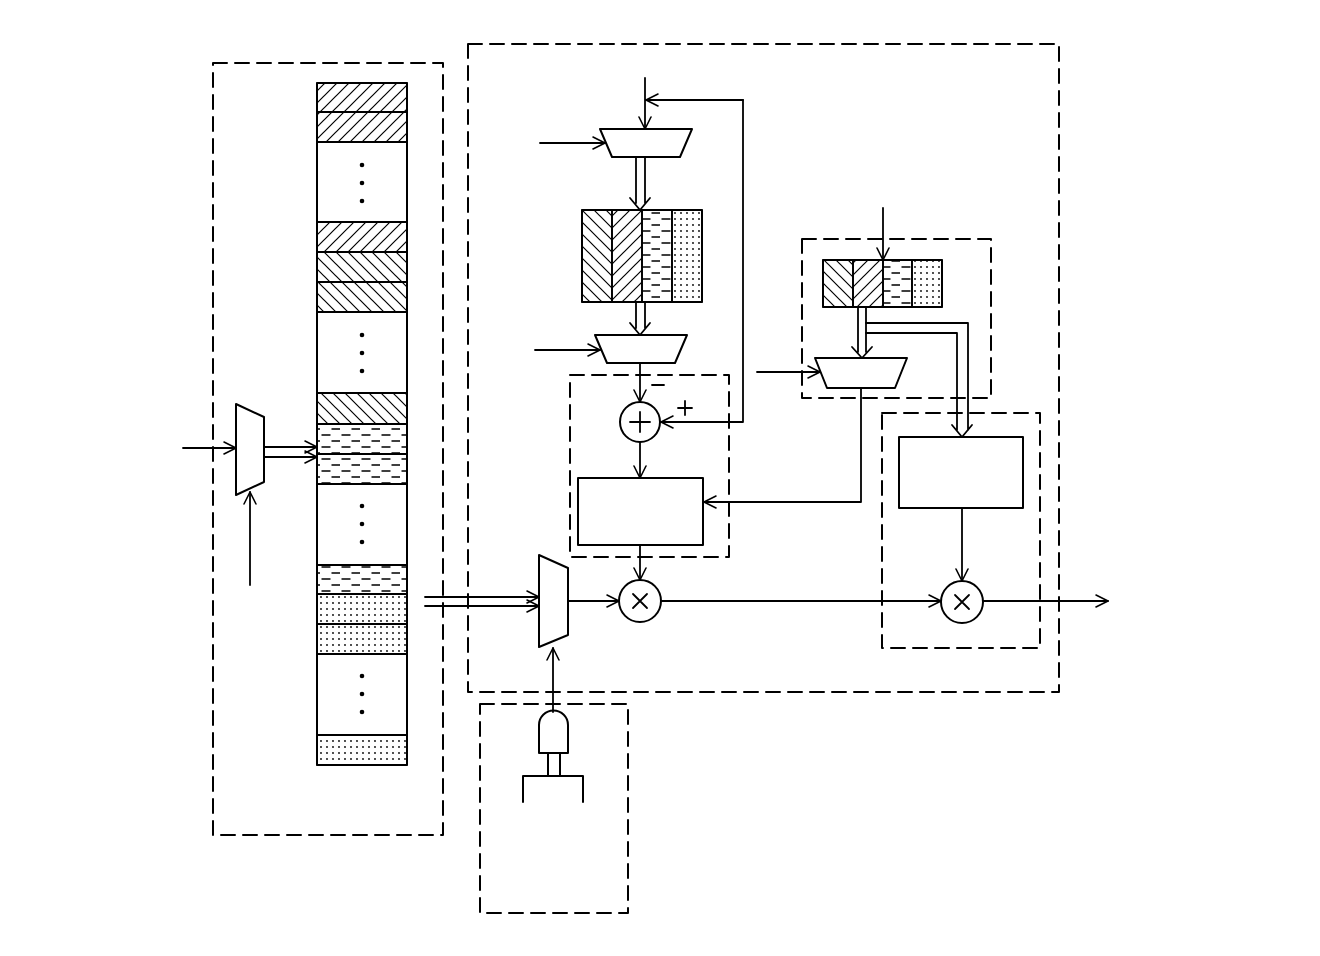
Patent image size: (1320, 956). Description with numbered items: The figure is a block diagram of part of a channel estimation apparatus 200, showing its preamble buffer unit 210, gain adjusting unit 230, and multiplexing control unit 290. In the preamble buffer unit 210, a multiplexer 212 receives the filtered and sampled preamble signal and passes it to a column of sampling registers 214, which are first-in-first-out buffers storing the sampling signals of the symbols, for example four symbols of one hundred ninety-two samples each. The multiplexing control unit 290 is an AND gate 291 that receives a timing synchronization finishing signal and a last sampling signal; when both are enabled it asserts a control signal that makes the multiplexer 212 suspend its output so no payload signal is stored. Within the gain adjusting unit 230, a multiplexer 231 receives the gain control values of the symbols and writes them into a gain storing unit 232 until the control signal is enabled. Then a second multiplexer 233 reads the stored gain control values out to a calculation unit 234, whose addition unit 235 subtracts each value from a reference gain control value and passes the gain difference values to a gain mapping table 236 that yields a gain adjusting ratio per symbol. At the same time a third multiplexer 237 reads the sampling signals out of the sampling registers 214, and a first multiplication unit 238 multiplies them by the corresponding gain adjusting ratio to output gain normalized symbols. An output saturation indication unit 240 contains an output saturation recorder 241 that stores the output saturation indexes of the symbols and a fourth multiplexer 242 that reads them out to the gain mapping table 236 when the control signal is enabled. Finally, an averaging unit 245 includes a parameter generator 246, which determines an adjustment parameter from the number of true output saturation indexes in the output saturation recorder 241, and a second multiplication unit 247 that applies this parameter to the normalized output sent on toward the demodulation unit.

The channel estimation apparatus 200 is at (1207, 863).
The preamble buffer unit 210 is at (213, 157).
The multiplexer 212 is at (250, 404).
The sampling registers 214 is at (317, 153).
The gain adjusting unit 230 is at (1060, 164).
The multiplexer 231 is at (686, 145).
The gain storing unit 232 is at (582, 218).
The second multiplexer 233 is at (675, 338).
The calculation unit 234 is at (570, 402).
The addition unit 235 is at (621, 416).
The gain mapping table 236 is at (660, 478).
The third multiplexer 237 is at (557, 556).
The first multiplication unit 238 is at (655, 585).
The output saturation indication unit 240 is at (965, 239).
The output saturation recorder 241 is at (942, 282).
The fourth multiplexer 242 is at (840, 390).
The averaging unit 245 is at (1040, 500).
The parameter generator 246 is at (1023, 458).
The second multiplication unit 247 is at (983, 585).
The multiplexing control unit 290 is at (628, 778).
The AND gate 291 is at (538, 720).